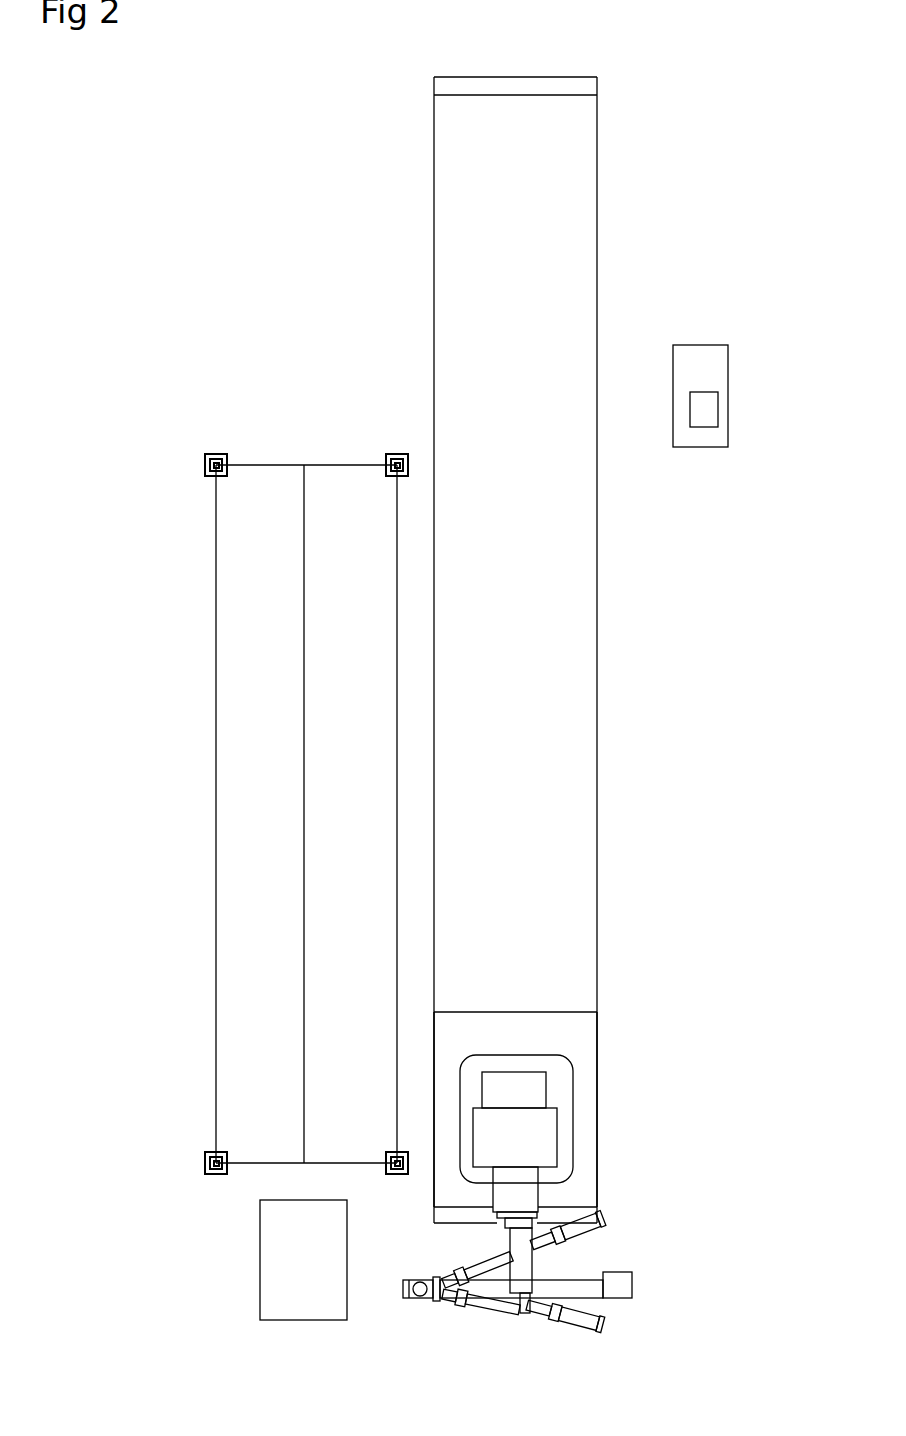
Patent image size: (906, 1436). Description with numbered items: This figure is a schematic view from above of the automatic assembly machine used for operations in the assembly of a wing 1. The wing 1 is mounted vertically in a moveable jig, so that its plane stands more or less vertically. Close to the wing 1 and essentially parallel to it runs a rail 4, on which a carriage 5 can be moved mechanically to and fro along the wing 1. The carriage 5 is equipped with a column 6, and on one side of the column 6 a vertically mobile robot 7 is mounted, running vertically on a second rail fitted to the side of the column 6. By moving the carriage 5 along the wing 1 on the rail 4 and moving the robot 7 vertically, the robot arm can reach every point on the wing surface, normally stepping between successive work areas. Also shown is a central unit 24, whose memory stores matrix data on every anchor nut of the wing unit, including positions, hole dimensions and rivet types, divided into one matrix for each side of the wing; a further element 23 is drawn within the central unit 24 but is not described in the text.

The wing 1 is at (303, 647).
The rail 4 is at (463, 298).
The carriage 5 is at (578, 1040).
The column 6 is at (553, 1135).
The robot 7 is at (623, 1283).
The display element 23 is at (707, 405).
The central unit 24 is at (728, 432).